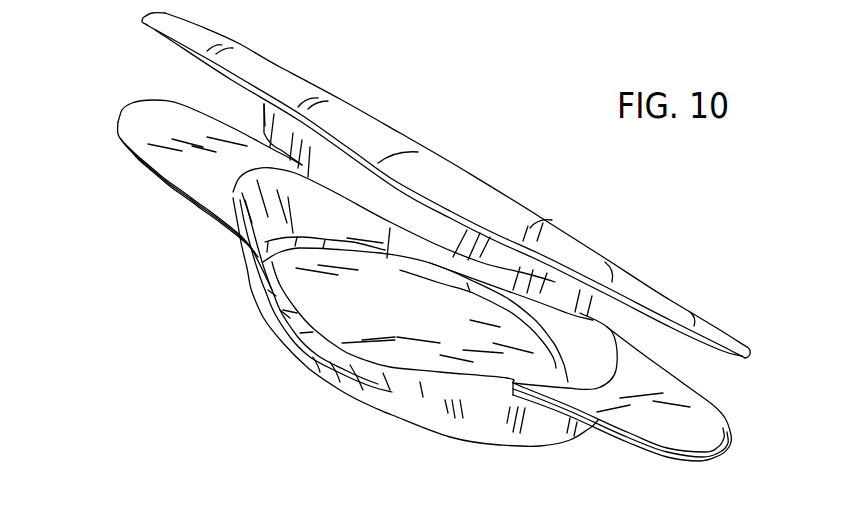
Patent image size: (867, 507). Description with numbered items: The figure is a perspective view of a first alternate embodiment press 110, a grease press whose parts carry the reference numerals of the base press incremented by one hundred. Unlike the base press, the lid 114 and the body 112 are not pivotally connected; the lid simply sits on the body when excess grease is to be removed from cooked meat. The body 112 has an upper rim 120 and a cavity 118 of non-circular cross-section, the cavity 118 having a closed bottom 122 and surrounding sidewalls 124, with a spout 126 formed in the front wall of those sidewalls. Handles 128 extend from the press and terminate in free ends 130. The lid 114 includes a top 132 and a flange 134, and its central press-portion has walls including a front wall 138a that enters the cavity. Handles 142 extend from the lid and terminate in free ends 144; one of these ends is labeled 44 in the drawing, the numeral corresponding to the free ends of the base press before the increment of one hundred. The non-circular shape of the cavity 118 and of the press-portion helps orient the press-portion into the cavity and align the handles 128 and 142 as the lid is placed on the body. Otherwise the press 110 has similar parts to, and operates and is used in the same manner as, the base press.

The press 110 is at (282, 399).
The body 112 is at (470, 423).
The lid 114 is at (408, 150).
The cavity 118 is at (307, 296).
The upper rim 120 is at (268, 287).
The closed bottom 122 is at (470, 336).
The surrounding sidewalls 124 is at (340, 219).
The spout 126 is at (284, 345).
The handles 128 is at (158, 170).
The free ends 130 is at (118, 135).
The top 132 is at (510, 220).
The flange 134 is at (560, 264).
The front wall 138a is at (407, 210).
The handles 142 is at (182, 58).
The free ends 144 is at (143, 19).
The blade end 44 is at (750, 355).